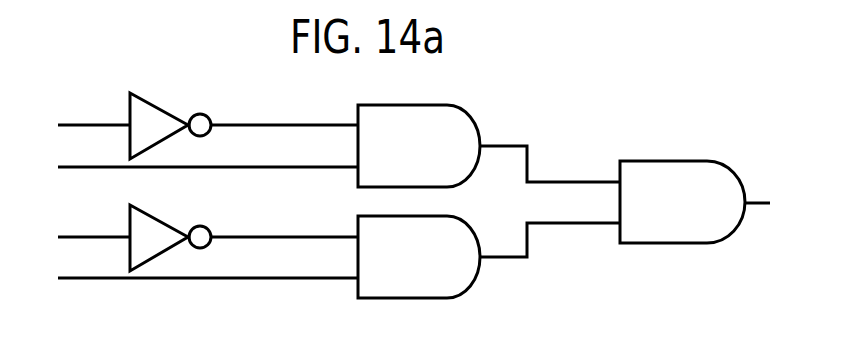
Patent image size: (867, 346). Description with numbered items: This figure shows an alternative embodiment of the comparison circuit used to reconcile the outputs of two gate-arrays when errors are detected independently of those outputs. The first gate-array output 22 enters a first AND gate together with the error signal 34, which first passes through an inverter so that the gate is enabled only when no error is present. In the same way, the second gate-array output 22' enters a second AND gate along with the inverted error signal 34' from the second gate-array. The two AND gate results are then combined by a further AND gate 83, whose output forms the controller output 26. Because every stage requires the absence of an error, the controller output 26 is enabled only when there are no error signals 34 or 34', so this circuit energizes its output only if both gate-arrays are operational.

The error signal 34 is at (87, 109).
The gate-array output 22 is at (201, 151).
The error signal 34' is at (86, 220).
The gate-array output 22' is at (200, 262).
The AND gate 83 is at (663, 161).
The controller output 26 is at (757, 203).